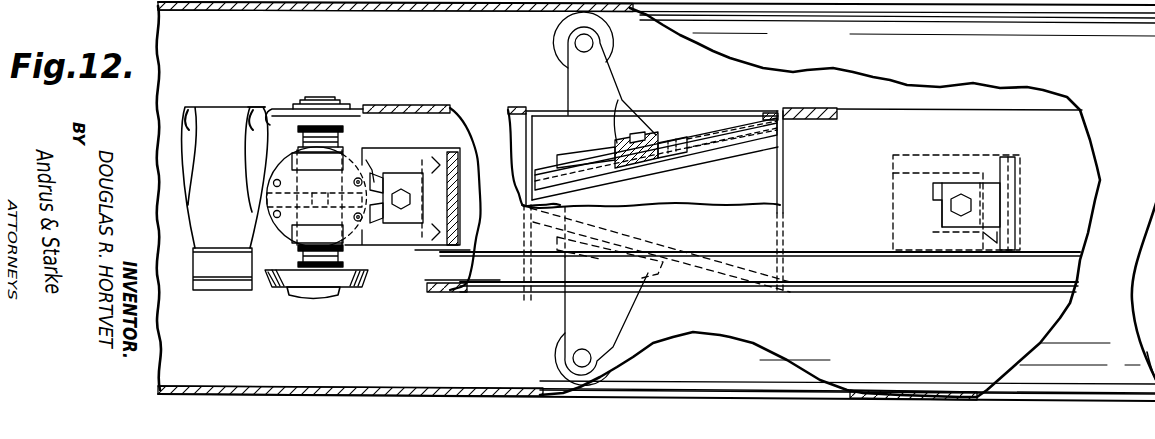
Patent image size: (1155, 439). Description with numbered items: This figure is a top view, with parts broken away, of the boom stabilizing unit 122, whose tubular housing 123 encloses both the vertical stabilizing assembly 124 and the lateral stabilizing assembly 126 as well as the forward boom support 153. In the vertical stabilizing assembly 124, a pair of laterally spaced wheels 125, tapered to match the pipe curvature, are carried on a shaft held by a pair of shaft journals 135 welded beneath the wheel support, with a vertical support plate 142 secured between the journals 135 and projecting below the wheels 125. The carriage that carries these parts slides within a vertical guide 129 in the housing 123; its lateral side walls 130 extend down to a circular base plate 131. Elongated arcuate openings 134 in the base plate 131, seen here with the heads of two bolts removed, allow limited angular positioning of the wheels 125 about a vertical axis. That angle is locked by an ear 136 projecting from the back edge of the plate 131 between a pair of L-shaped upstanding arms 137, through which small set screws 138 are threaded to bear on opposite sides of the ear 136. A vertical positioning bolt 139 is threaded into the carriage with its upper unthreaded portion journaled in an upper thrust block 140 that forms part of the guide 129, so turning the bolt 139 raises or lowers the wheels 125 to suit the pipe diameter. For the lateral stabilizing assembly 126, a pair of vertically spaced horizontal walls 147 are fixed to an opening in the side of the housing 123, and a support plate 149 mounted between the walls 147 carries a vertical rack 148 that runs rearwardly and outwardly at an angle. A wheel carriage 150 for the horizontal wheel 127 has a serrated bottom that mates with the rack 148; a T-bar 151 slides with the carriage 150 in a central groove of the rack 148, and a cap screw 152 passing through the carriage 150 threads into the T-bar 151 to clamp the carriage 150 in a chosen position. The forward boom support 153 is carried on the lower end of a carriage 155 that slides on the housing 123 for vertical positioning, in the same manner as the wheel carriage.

The stabilizing unit 122 is at (827, 106).
The tubular housing 123 is at (438, 105).
The vertical stabilizing assembly 124 is at (401, 258).
The wheels 125 is at (296, 108).
The lateral stabilizing assembly 126 is at (781, 95).
The wheels 127 is at (556, 46).
The vertical guide 129 is at (441, 207).
The lateral side walls 130 is at (352, 136).
The circular base plate 131 is at (277, 235).
The elongated arcuate openings 134 is at (273, 213).
The shaft journals 135 is at (285, 150).
The ear 136 is at (378, 180).
The L-shaped upstanding arms 137 is at (370, 177).
The set screws 138 is at (353, 216).
The vertical positioning bolt 139 is at (410, 200).
The upper thrust block 140 is at (441, 222).
The vertical support plate 142 is at (323, 196).
The horizontal walls 147 is at (763, 168).
The vertical rack 148 is at (712, 133).
The support plate 149 is at (665, 132).
The wheel carriage 150 is at (611, 82).
The T-bar 151 is at (637, 157).
The cap screw 152 is at (637, 134).
The forward boom support 153 is at (929, 218).
The carriage 155 is at (972, 166).